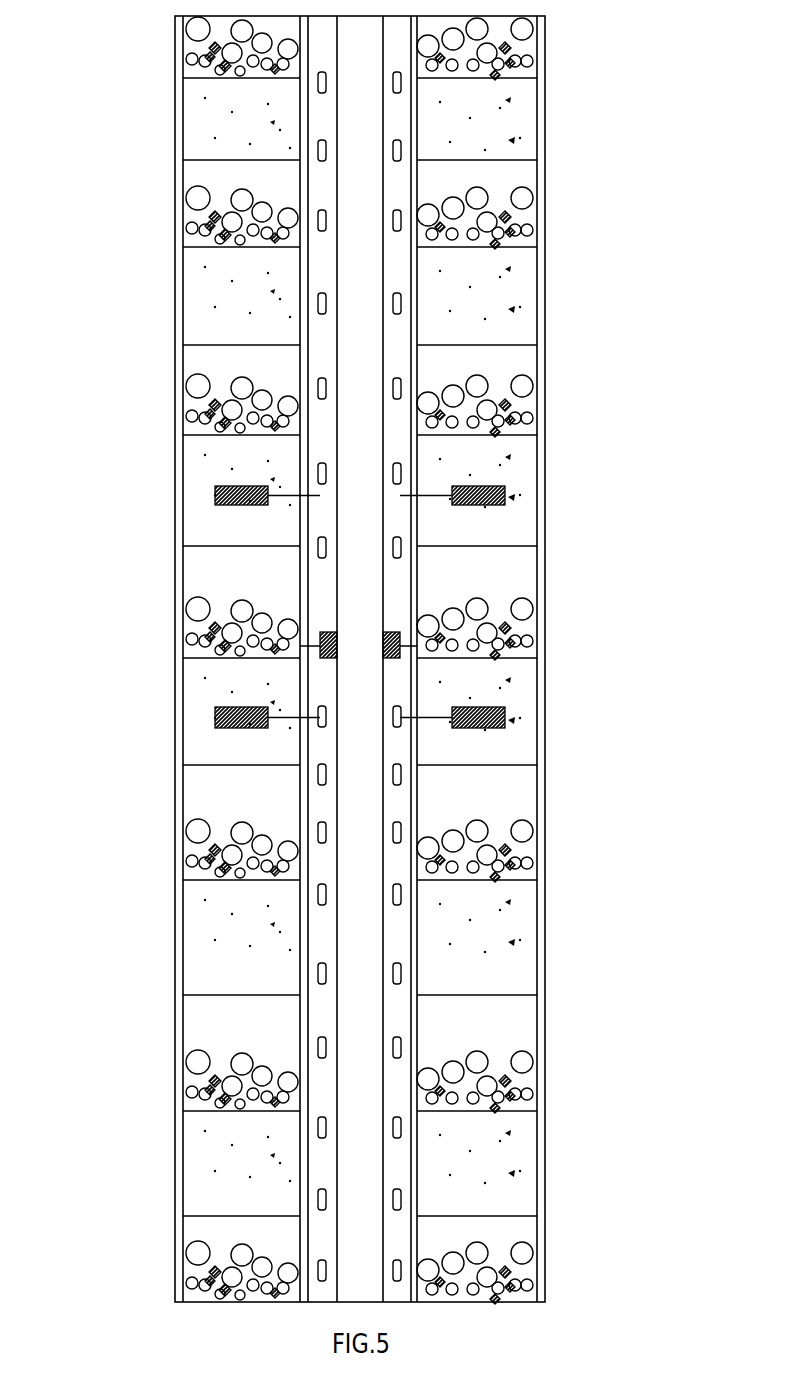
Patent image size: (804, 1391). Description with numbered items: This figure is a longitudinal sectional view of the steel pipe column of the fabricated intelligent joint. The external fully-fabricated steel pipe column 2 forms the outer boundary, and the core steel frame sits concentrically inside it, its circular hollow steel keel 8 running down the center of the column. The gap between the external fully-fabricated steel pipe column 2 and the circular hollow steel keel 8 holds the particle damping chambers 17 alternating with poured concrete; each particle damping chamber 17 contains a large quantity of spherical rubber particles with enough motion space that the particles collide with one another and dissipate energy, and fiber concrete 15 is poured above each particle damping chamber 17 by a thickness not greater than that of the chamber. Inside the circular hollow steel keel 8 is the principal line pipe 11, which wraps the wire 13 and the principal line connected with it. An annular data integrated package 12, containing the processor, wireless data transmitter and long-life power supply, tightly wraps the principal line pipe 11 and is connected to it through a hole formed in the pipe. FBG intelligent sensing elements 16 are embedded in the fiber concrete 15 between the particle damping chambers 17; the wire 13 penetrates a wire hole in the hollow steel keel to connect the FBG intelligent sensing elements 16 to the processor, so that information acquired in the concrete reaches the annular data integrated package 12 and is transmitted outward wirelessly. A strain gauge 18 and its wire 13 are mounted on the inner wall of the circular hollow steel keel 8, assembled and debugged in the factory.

The external fully-fabricated steel pipe column 2 is at (540, 298).
The circular hollow steel keel 8 is at (300, 135).
The principal line pipe 11 is at (383, 123).
The annular data integrated package 12 is at (388, 640).
The wire 13 is at (402, 933).
The fiber concrete 15 is at (225, 320).
The FBG intelligent sensing element 16 is at (453, 487).
The particle damping chamber 17 is at (237, 637).
The strain gauge 18 is at (393, 1048).